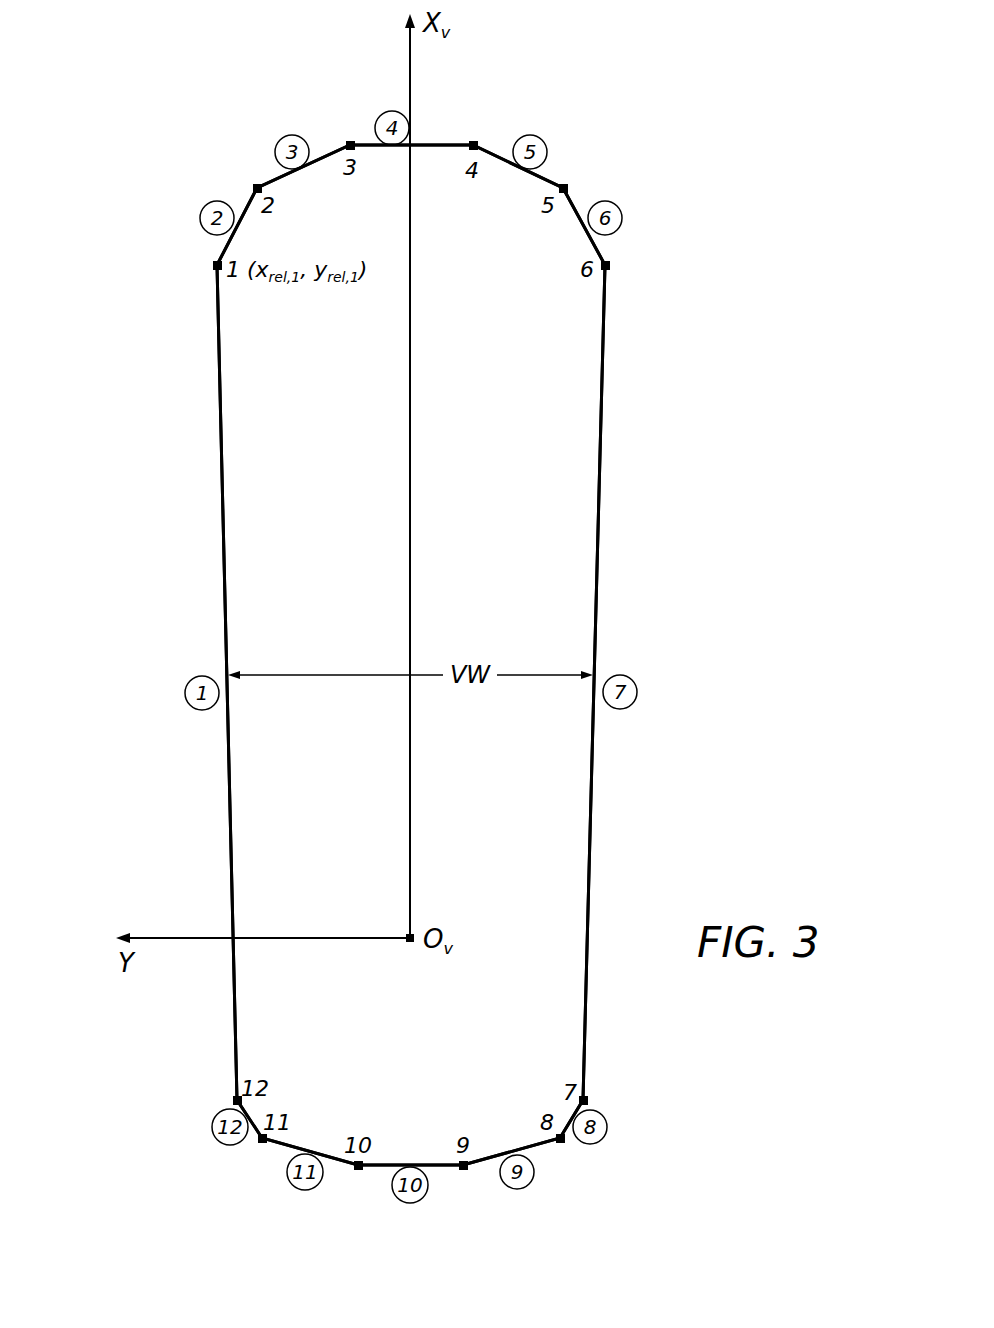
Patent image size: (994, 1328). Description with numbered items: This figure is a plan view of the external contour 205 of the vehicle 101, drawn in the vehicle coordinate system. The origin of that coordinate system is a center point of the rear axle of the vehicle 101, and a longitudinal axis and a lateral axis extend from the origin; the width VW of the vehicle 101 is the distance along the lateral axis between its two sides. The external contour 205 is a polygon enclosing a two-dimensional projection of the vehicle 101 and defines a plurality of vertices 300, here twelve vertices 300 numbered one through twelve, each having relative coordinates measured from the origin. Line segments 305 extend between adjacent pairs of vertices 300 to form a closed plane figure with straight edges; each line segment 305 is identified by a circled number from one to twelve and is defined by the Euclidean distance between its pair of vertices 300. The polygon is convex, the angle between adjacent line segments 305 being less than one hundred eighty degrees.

The vehicle 101 is at (102, 100).
The external contour 205 is at (605, 392).
The vertex 300 is at (253, 186).
The line segment 305 is at (237, 227).